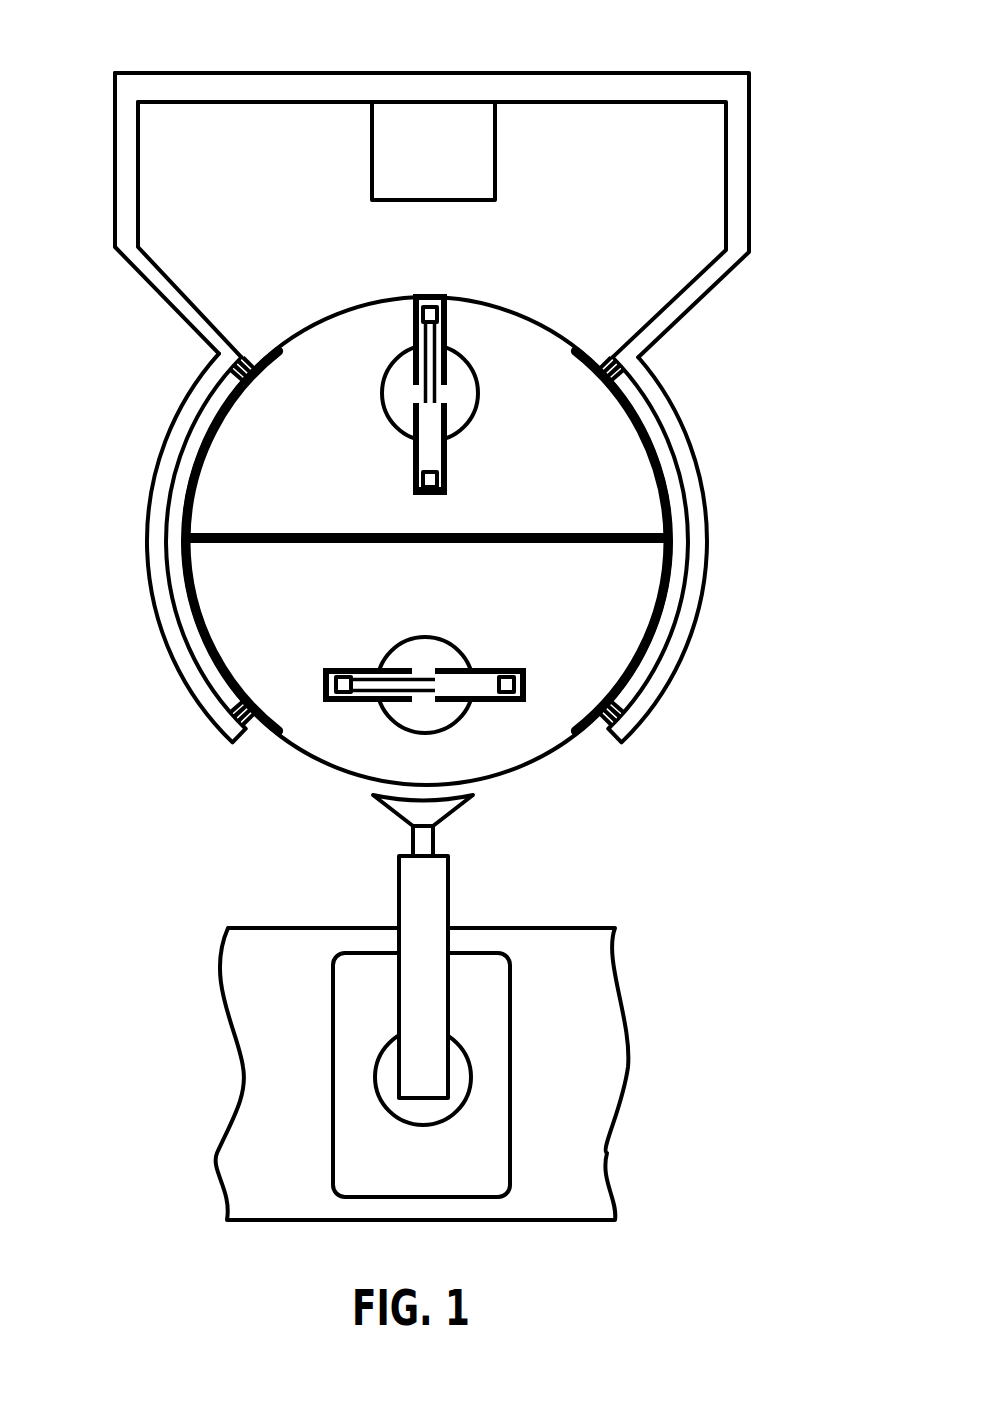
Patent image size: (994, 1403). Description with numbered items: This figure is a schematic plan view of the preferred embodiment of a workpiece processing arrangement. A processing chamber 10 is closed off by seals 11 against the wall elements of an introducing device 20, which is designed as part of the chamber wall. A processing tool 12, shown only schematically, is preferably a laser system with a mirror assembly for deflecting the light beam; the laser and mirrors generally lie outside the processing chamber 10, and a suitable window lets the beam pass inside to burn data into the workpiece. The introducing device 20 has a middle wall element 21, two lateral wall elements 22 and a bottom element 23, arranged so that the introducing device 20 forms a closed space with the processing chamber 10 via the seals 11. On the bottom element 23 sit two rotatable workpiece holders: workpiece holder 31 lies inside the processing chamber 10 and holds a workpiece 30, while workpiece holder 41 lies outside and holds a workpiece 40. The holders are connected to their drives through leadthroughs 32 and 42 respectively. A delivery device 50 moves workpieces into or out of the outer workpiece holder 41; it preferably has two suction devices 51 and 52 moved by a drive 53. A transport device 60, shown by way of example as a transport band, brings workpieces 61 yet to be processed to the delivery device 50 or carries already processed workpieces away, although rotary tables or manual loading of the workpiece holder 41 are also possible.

The processing chamber 10 is at (742, 200).
The seals 11 is at (640, 357).
The processing tool 12 is at (427, 130).
The introducing device 20 is at (782, 545).
The middle wall element 21 is at (618, 546).
The lateral wall elements 22 is at (185, 585).
The bottom element 23 is at (605, 445).
The workpiece 30 is at (428, 335).
The workpiece holder 31 is at (417, 453).
The leadthrough 32 is at (397, 390).
The workpiece 40 is at (485, 683).
The workpiece holder 41 is at (365, 697).
The leadthrough 42 is at (440, 717).
The delivery device 50 is at (397, 946).
The suction device 51 is at (420, 839).
The suction device 52 is at (382, 1075).
The drive 53 is at (420, 897).
The transport device 60 is at (272, 1178).
The workpieces 61 is at (358, 978).